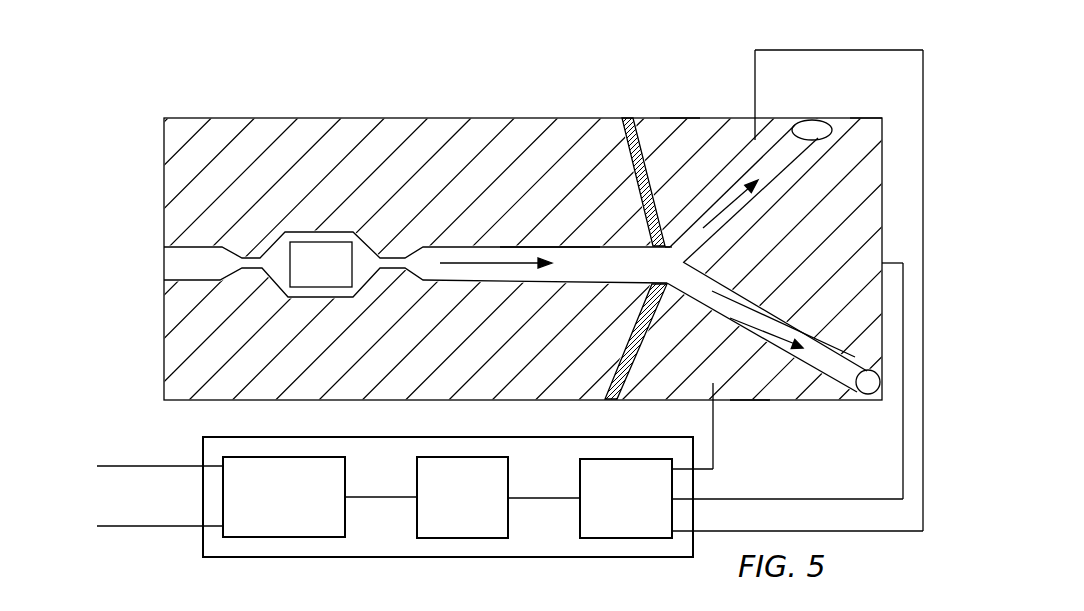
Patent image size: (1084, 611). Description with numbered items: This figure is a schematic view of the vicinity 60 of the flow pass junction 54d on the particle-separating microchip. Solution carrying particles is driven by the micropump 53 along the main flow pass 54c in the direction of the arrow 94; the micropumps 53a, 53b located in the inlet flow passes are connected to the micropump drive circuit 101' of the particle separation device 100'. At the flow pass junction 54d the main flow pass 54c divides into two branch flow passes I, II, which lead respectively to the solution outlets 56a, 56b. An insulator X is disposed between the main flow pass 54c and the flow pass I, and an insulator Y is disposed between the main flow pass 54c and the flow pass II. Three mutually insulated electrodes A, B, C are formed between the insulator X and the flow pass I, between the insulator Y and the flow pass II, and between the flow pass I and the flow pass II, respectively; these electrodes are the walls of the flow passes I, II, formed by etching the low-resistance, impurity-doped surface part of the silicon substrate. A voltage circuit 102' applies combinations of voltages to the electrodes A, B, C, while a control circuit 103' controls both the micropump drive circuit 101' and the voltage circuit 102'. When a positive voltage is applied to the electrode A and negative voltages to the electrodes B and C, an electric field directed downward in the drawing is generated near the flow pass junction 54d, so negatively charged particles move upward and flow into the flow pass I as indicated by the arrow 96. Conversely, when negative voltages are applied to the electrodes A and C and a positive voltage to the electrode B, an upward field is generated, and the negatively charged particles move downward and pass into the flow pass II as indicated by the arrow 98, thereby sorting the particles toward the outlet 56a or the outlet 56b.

The vicinity of the flow pass junction 60 is at (452, 100).
The micropump 53 is at (321, 264).
The micropump 53a is at (118, 464).
The micropump 53b is at (118, 524).
The arrow 94 is at (462, 265).
The main flow pass 54c is at (550, 250).
The flow pass junction 54d is at (663, 265).
The arrow 96 is at (732, 190).
The arrow 98 is at (757, 315).
The solution outlet 56a is at (814, 120).
The solution outlet 56b is at (862, 392).
The insulator X is at (622, 126).
The insulator Y is at (608, 386).
The electrode A is at (672, 118).
The electrode B is at (748, 397).
The electrode C is at (862, 118).
The branch flow pass I is at (784, 134).
The branch flow pass II is at (826, 363).
The particle separation device 100' is at (410, 497).
The micropump drive circuit 101' is at (320, 497).
The control circuit 103' is at (498, 497).
The voltage circuit 102' is at (594, 498).